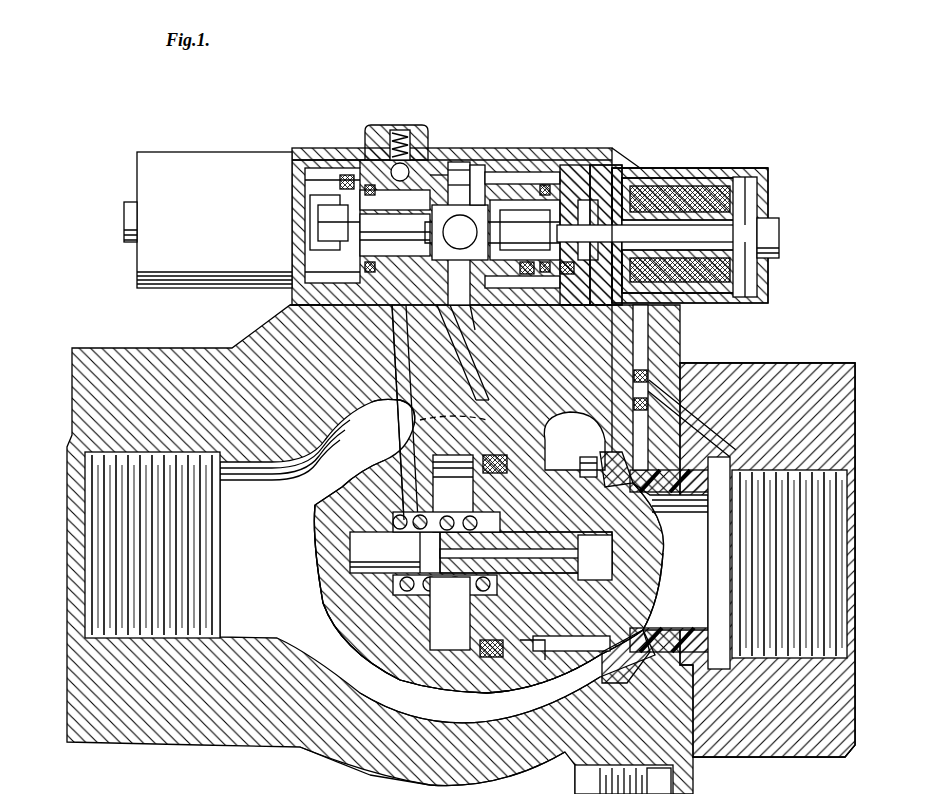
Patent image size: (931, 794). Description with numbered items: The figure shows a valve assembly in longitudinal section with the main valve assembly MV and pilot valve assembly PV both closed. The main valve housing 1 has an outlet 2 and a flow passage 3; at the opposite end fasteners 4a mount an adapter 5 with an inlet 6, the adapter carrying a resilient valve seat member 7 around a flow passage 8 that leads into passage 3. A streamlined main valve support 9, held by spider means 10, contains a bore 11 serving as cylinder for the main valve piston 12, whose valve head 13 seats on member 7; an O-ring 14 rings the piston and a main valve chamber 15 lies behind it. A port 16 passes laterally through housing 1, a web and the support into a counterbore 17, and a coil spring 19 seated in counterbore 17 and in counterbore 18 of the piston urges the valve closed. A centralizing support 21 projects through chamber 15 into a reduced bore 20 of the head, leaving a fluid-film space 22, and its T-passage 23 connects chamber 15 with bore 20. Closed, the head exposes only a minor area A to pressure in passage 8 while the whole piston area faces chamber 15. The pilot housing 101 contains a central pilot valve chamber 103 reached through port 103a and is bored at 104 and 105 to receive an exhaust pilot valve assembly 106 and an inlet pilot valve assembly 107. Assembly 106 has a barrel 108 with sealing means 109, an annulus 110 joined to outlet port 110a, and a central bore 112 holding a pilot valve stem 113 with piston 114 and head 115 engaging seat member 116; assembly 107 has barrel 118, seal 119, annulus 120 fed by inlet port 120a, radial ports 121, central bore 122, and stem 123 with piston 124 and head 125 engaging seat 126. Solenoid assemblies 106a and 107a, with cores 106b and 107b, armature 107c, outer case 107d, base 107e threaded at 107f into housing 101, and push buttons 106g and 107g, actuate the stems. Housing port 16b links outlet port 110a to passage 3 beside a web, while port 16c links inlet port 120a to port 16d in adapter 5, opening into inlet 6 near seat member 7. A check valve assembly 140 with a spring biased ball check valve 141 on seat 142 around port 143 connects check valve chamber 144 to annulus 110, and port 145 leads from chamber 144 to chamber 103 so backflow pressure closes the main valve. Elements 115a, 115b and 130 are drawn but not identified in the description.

The main valve housing 1 is at (202, 362).
The outlet 2 is at (84, 642).
The flow passage 3 is at (420, 770).
The fasteners 4a is at (690, 780).
The adapter 5 is at (790, 366).
The inlet 6 is at (845, 660).
The valve seat member 7 is at (677, 627).
The flow passage 8 is at (505, 554).
The minor area A is at (667, 590).
The main valve support 9 is at (320, 572).
The spider means 10 is at (393, 417).
The bore 11 is at (522, 650).
The main valve piston 12 is at (574, 441).
The valve head 13 is at (642, 575).
The O-ring 14 is at (493, 660).
The main valve chamber 15 is at (461, 641).
The port 16 is at (382, 444).
The port 16b is at (362, 392).
The port 16c is at (652, 345).
The port 16d is at (746, 366).
The counterbore 17 is at (412, 628).
The counterbore 18 is at (466, 516).
The coil spring 19 is at (445, 594).
The reduced diameter bore 20 is at (563, 610).
The centralizing support 21 is at (578, 520).
The space 22 is at (520, 650).
The T-passage 23 is at (548, 554).
The main valve assembly MV is at (702, 357).
The pilot valve assembly PV is at (644, 156).
The pilot valve housing 101 is at (282, 292).
The pilot valve chamber 103 is at (472, 200).
The port 103a is at (470, 330).
The bore 104 is at (322, 150).
The bore 105 is at (546, 200).
The exhaust pilot valve assembly 106 is at (360, 160).
The solenoid assembly 106a is at (198, 198).
The core 106b is at (306, 212).
The manual push button 106g is at (124, 222).
The inlet pilot valve assembly 107 is at (580, 192).
The solenoid assembly 107a is at (750, 170).
The core 107b is at (746, 236).
The armature 107c is at (728, 270).
The outer case 107d is at (690, 178).
The base 107e is at (698, 168).
The threaded portion 107f is at (651, 135).
The push button 107g is at (780, 238).
The barrel 108 is at (306, 190).
The sealing means 109 is at (348, 165).
The annulus 110 is at (348, 300).
The outlet port 110a is at (395, 322).
The central bore 112 is at (440, 318).
The pilot valve stem 113 is at (446, 160).
The piston 114 is at (300, 240).
The head 115 is at (456, 180).
The body wall portion 115a is at (335, 770).
The body wall portion 115b is at (395, 784).
The seat member 116 is at (458, 165).
The barrel 118 is at (544, 182).
The seal 119 is at (588, 175).
The annulus 120 is at (520, 175).
The inlet port 120a is at (550, 302).
The radial ports 121 is at (530, 279).
The central bore 122 is at (632, 182).
The inlet pilot valve stem 123 is at (548, 190).
The piston 124 is at (577, 282).
The head 125 is at (478, 316).
The seat 126 is at (508, 172).
The ball joint 130 is at (460, 232).
The check valve assembly 140 is at (429, 115).
The ball check valve 141 is at (389, 132).
The seat 142 is at (395, 199).
The port 143 is at (395, 235).
The check valve chamber 144 is at (410, 163).
The port 145 is at (480, 170).